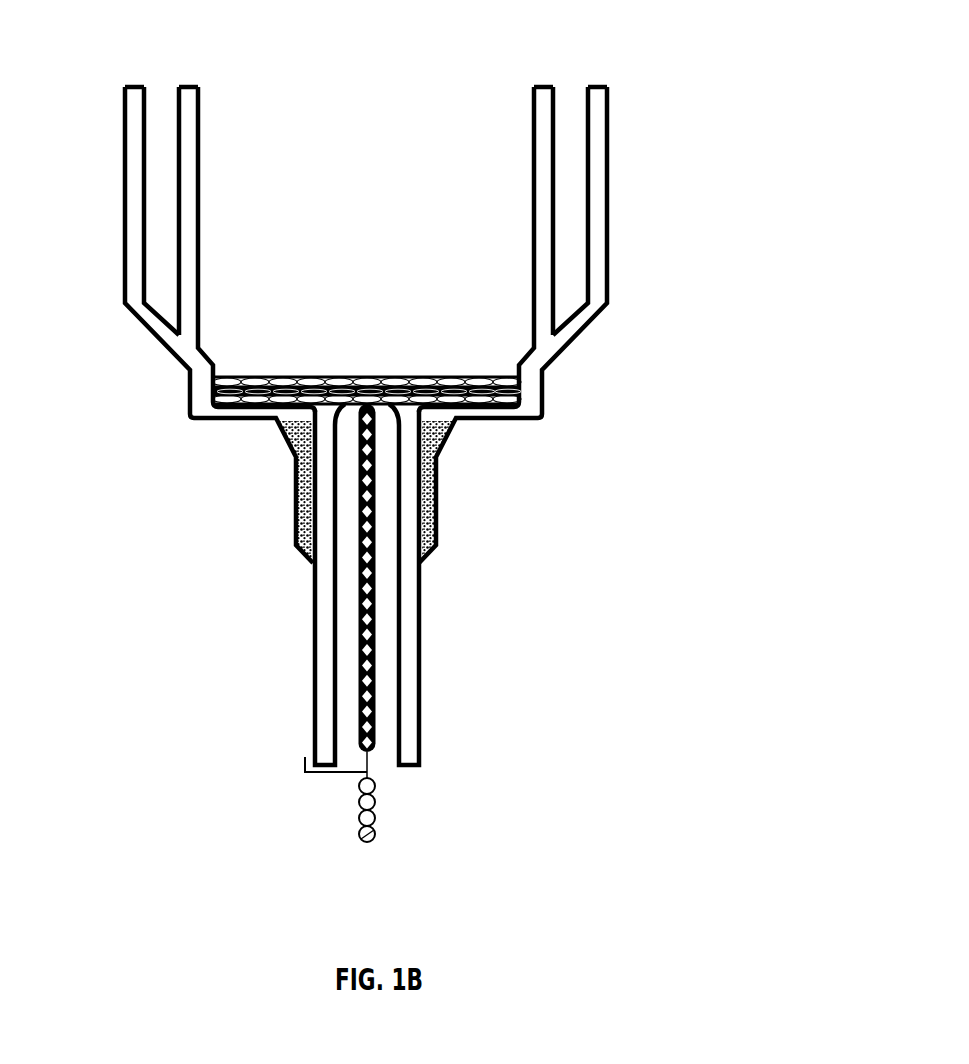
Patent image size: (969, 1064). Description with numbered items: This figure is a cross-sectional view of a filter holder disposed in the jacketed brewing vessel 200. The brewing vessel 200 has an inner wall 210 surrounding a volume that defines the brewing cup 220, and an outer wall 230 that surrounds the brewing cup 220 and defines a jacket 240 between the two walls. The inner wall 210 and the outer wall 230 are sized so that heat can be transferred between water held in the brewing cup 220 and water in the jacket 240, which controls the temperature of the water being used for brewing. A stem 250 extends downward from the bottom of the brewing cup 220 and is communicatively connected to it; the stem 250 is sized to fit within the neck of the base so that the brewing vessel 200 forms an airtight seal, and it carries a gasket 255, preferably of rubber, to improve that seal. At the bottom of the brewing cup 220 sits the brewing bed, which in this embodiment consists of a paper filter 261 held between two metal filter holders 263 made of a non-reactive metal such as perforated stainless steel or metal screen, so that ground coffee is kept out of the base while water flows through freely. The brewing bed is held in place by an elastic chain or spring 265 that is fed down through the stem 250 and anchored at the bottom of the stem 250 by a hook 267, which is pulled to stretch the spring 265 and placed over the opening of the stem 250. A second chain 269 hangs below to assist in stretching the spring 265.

The brewing vessel 200 is at (106, 419).
The inner wall 210 is at (190, 231).
The brewing cup 220 is at (449, 182).
The outer wall 230 is at (131, 181).
The jacket 240 is at (571, 110).
The stem 250 is at (300, 595).
The gasket 255 is at (296, 495).
The paper filter 261 is at (436, 388).
The metal filter holders 263 is at (323, 382).
The elastic chain or spring 265 is at (357, 687).
The hook 267 is at (302, 776).
The second chain 269 is at (359, 836).